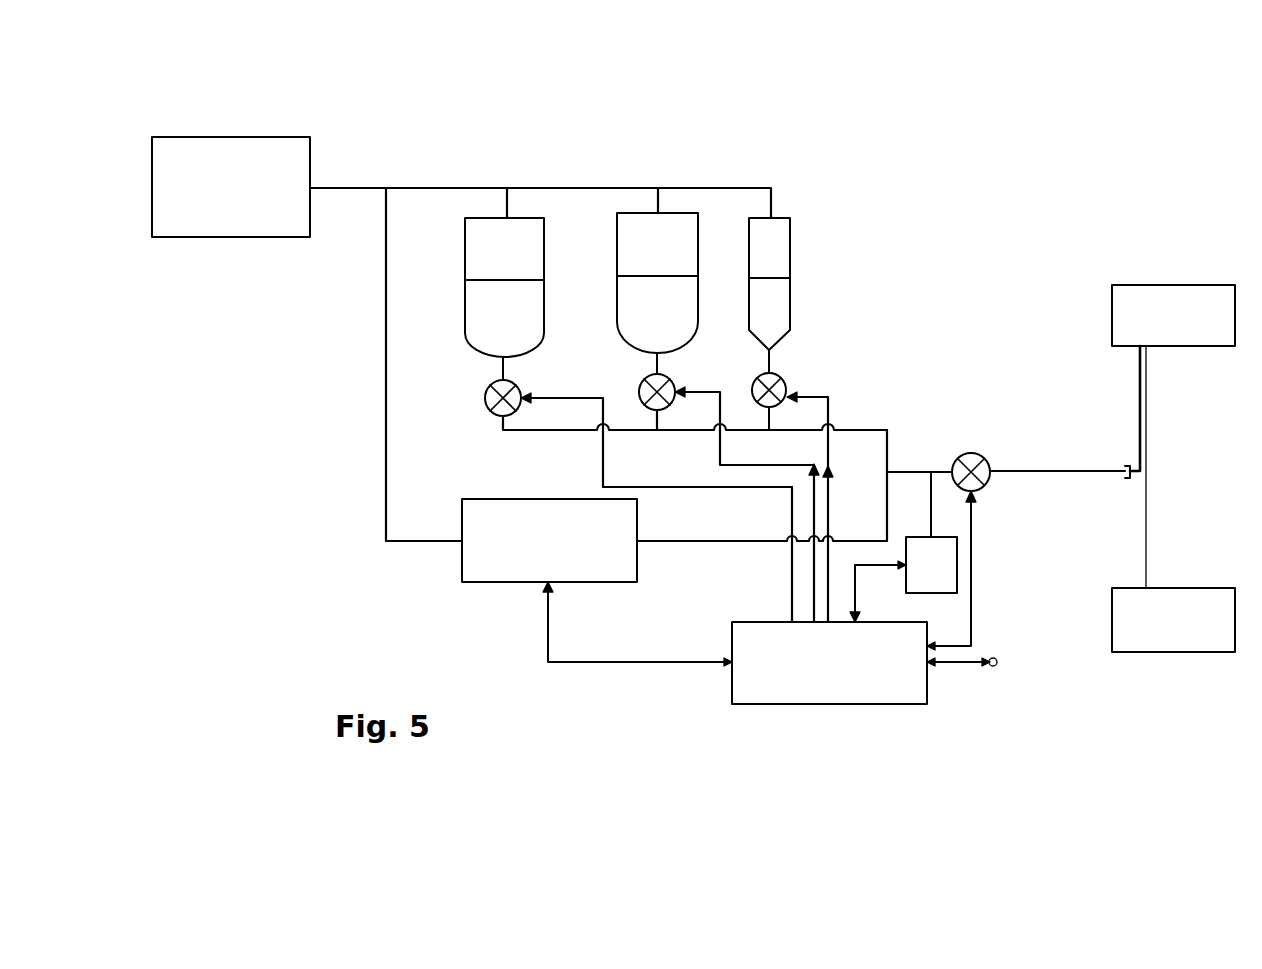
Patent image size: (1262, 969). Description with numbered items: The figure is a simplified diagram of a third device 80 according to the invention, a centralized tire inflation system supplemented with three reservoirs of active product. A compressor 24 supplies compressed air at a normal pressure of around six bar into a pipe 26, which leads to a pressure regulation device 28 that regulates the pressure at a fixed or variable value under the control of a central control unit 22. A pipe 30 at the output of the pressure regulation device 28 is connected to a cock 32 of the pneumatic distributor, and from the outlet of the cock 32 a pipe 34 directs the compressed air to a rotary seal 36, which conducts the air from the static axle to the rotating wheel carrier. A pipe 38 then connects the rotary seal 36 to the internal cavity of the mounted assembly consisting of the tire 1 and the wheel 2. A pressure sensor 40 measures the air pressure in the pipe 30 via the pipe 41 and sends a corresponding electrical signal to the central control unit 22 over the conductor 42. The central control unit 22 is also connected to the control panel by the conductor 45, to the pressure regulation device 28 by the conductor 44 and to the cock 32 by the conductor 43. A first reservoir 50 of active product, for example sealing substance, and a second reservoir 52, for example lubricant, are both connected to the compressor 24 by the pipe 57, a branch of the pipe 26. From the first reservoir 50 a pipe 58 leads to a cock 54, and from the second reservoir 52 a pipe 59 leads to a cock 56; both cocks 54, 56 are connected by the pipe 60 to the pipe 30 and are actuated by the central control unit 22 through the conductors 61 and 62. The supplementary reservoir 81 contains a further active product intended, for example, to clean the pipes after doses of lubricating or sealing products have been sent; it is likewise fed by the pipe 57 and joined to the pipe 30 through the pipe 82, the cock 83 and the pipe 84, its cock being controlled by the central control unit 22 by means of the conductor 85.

The tire 1 is at (1172, 297).
The wheel 2 is at (1150, 378).
The central control unit 22 is at (774, 690).
The compressor 24 is at (220, 157).
The pipe 26 is at (362, 188).
The pressure regulation device 28 is at (495, 565).
The pipe 30 is at (723, 545).
The cock 32 is at (966, 455).
The pipe 34 is at (1058, 468).
The rotary seal 36 is at (1123, 480).
The pipe 38 is at (1138, 403).
The pressure sensor 40 is at (942, 567).
The pipe 41 is at (930, 507).
The conductor 42 is at (855, 580).
The conductor 43 is at (975, 512).
The conductor 44 is at (688, 663).
The conductor 45 is at (968, 665).
The first reservoir 50 is at (489, 252).
The second reservoir 52 is at (672, 267).
The cock 54 is at (487, 393).
The cock 56 is at (675, 387).
The pipe 57 is at (553, 189).
The pipe 58 is at (497, 365).
The pipe 59 is at (641, 362).
The pipe 60 is at (570, 435).
The conductor 61 is at (792, 597).
The conductor 62 is at (814, 600).
The device 80 is at (907, 240).
The reservoir 81 is at (780, 260).
The pipe 82 is at (787, 335).
The cock 83 is at (780, 387).
The pipe 84 is at (770, 417).
The conductor 85 is at (815, 397).